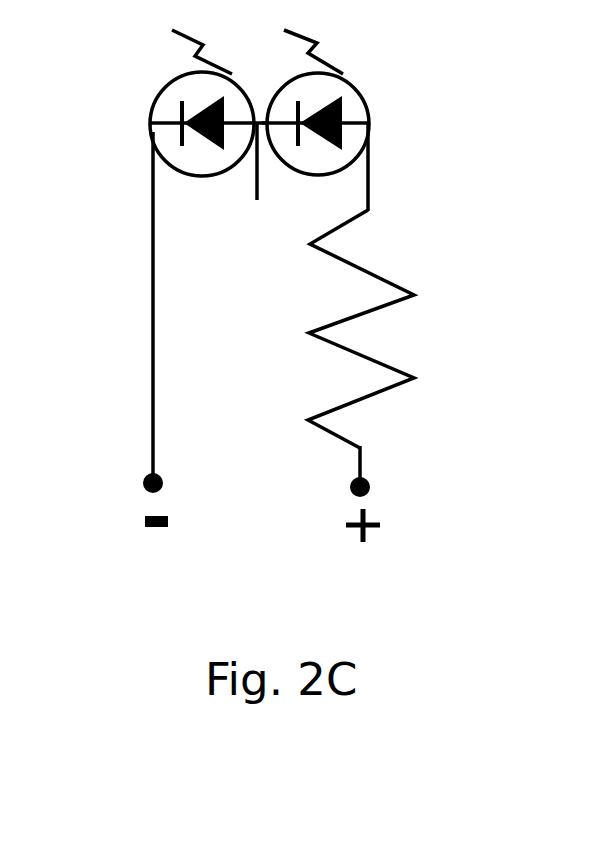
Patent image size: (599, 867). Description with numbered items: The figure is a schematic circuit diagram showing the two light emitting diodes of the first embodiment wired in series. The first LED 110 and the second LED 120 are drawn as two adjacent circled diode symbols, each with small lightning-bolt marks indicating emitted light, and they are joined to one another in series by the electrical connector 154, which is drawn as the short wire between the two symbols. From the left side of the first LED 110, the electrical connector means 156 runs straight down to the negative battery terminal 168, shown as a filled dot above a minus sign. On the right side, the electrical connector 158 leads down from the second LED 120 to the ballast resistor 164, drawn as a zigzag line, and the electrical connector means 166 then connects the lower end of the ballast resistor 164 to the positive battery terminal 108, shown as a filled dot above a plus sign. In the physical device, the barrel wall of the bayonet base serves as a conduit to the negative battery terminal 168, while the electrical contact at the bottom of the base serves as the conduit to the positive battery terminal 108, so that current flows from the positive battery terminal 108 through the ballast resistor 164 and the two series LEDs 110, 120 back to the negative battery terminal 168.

The positive battery terminal 108 is at (369, 492).
The LED 110 is at (164, 83).
The LED 120 is at (357, 93).
The electrical connector 154 is at (255, 181).
The electrical connector means 156 is at (154, 380).
The electrical connector 158 is at (368, 176).
The ballast resistor 164 is at (367, 270).
The electrical connector means 166 is at (362, 456).
The negative battery terminal 168 is at (162, 480).